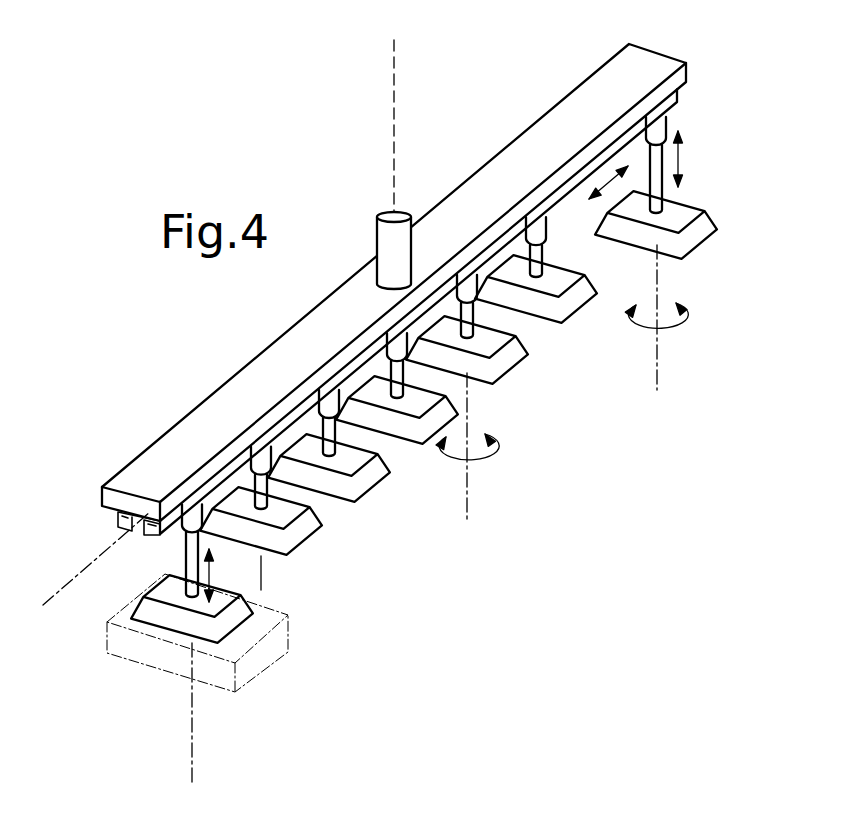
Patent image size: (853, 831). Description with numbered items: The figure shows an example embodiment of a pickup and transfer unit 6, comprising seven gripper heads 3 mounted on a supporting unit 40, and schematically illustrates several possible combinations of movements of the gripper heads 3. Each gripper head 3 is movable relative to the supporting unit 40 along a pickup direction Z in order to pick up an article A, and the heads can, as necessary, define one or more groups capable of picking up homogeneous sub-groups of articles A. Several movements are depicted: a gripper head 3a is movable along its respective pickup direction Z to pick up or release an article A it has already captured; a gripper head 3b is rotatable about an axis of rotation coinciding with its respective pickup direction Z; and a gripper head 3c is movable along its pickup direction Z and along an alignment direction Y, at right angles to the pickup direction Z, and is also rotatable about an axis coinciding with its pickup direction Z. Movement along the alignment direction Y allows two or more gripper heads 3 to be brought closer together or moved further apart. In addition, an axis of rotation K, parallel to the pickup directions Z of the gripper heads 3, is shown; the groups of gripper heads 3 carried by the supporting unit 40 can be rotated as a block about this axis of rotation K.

The pickup and transfer unit 6 is at (534, 99).
The supporting unit 40 is at (216, 430).
The gripper heads 3 is at (387, 538).
The gripper head 3a is at (137, 578).
The gripper head 3b is at (543, 381).
The gripper head 3c is at (733, 199).
The axis of rotation K is at (394, 98).
The pickup direction Z is at (193, 718).
The alignment direction Y is at (88, 565).
The article A is at (270, 645).